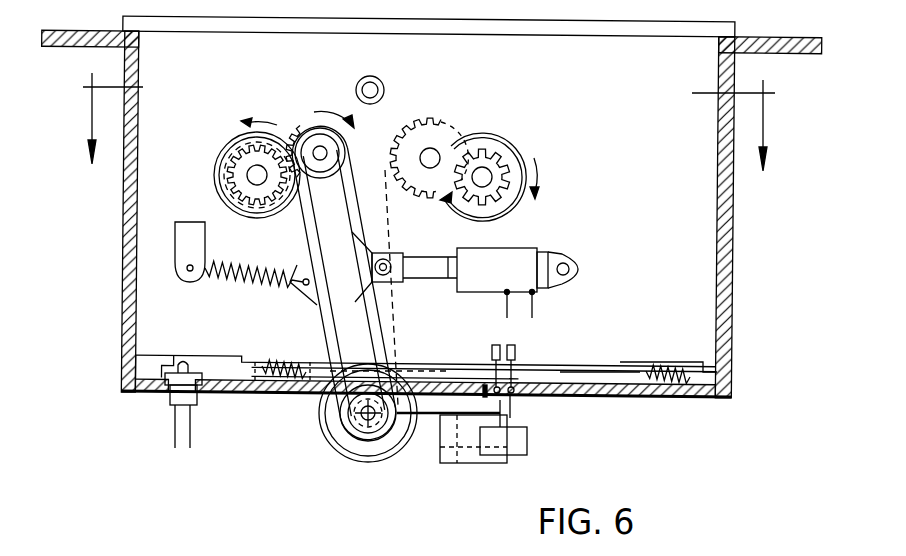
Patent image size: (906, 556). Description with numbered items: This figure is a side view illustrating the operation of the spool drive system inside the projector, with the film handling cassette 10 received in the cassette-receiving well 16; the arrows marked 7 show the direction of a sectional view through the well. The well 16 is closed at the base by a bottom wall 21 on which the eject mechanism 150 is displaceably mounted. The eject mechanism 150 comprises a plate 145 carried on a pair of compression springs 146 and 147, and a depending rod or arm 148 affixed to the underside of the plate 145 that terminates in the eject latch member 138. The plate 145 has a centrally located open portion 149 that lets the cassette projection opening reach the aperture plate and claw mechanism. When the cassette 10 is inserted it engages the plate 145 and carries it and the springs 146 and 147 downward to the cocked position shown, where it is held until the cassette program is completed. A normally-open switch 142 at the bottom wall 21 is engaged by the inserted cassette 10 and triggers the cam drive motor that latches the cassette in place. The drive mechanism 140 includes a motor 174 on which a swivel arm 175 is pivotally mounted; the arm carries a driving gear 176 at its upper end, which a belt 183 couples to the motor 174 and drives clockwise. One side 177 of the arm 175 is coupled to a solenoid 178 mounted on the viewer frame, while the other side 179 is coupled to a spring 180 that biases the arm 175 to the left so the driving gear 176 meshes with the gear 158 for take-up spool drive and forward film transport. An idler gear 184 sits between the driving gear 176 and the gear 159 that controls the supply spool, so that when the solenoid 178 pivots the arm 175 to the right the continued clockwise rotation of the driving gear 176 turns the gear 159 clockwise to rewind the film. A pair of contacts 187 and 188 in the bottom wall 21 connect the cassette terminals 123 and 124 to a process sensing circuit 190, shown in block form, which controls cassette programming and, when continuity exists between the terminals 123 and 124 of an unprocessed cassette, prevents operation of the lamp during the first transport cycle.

The section line 7- 7 is at (429, 112).
The film handling cassette 10 is at (430, 221).
The cassette-receiving well 16 is at (396, 368).
The bottom wall 21 is at (140, 394).
The cassette terminal 123 is at (500, 345).
The cassette terminal 124 is at (513, 345).
The eject latch member 138 is at (417, 433).
The drive mechanism 140 is at (344, 432).
The switch 142 is at (177, 390).
The plate 145 is at (618, 361).
The compression spring 146 is at (262, 372).
The compression spring 147 is at (690, 388).
The depending rod or arm 148 is at (458, 377).
The open portion 149 is at (440, 360).
The eject mechanism 150 is at (613, 372).
The gear 158 is at (244, 137).
The gear 159 is at (498, 162).
The motor 174 is at (350, 462).
The swivel arm 175 is at (362, 229).
The driving gear 176 is at (290, 132).
The one side of arm 177 is at (386, 258).
The solenoid 178 is at (505, 248).
The other side of arm 179 is at (302, 262).
The spring 180 is at (262, 288).
The belt 183 is at (380, 320).
The idler gear 184 is at (455, 137).
The contact 187 is at (510, 426).
The contact 188 is at (515, 400).
The process sensing circuit 190 is at (522, 455).